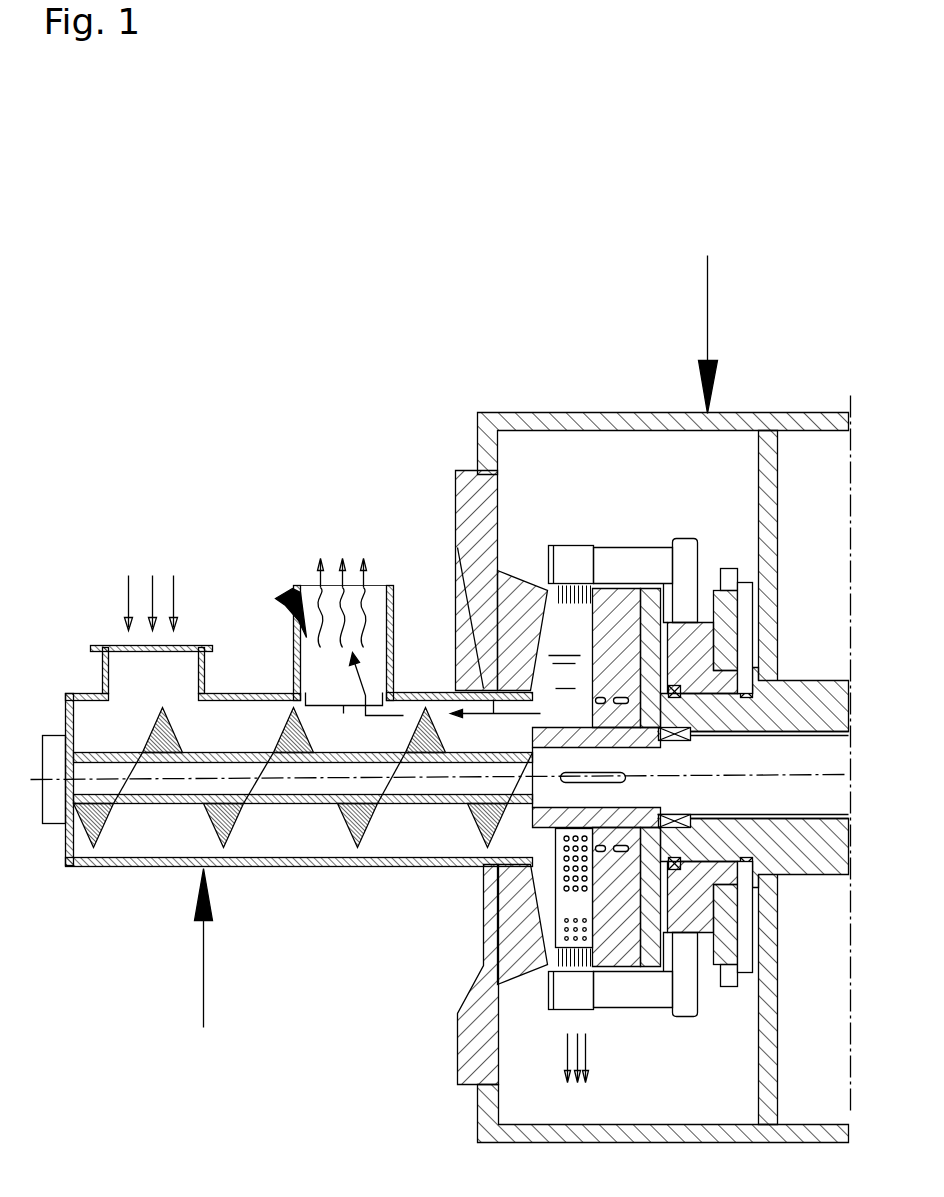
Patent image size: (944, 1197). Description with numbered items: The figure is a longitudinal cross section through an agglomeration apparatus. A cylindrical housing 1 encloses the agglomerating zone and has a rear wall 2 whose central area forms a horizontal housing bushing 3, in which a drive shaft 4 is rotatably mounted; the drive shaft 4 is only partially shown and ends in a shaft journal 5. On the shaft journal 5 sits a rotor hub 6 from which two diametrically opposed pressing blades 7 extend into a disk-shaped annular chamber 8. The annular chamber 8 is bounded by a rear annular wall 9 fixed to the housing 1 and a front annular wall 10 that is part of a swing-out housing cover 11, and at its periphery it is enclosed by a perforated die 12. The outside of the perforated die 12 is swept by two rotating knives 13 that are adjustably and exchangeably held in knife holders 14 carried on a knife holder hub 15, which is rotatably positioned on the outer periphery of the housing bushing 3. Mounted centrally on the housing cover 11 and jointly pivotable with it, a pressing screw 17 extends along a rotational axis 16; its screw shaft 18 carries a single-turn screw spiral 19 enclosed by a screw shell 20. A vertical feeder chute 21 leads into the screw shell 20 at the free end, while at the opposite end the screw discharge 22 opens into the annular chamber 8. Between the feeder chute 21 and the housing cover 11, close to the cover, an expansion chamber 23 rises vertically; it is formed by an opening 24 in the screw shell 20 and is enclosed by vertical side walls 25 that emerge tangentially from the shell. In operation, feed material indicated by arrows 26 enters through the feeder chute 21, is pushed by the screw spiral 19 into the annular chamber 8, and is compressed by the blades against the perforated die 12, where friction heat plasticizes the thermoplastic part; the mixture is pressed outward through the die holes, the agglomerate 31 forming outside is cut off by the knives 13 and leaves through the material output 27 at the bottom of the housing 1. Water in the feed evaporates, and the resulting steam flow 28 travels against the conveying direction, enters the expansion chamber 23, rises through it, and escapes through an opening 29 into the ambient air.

The cylindrical housing 1 is at (702, 335).
The rear wall 2 is at (770, 540).
The housing bushing 3 is at (808, 686).
The drive shaft 4 is at (805, 757).
The shaft journal 5 is at (647, 787).
The rotor hub 6 is at (618, 747).
The pressing blades 7 is at (595, 960).
The annular chamber 8 is at (548, 903).
The rear annular wall 9 is at (613, 600).
The front annular wall 10 is at (505, 572).
The housing cover 11 is at (465, 1050).
The perforated die 12 is at (592, 588).
The rotating knives 13 is at (568, 543).
The knife holders 14 is at (650, 560).
The knife holder hub 15 is at (730, 588).
The rotational axis 16 is at (150, 775).
The pressing screw 17 is at (203, 962).
The screw shaft 18 is at (288, 806).
The screw spiral 19 is at (372, 858).
The screw shell 20 is at (220, 692).
The feeder chute 21 is at (107, 643).
The screw discharge 22 is at (482, 865).
The expansion chamber 23 is at (283, 593).
The opening 24 is at (423, 699).
The side walls 25 is at (288, 653).
The arrows 26 is at (148, 582).
The material output 27 is at (653, 1087).
The steam flow 28 is at (340, 572).
The opening 29 is at (390, 585).
The agglomerate 31 is at (572, 1083).